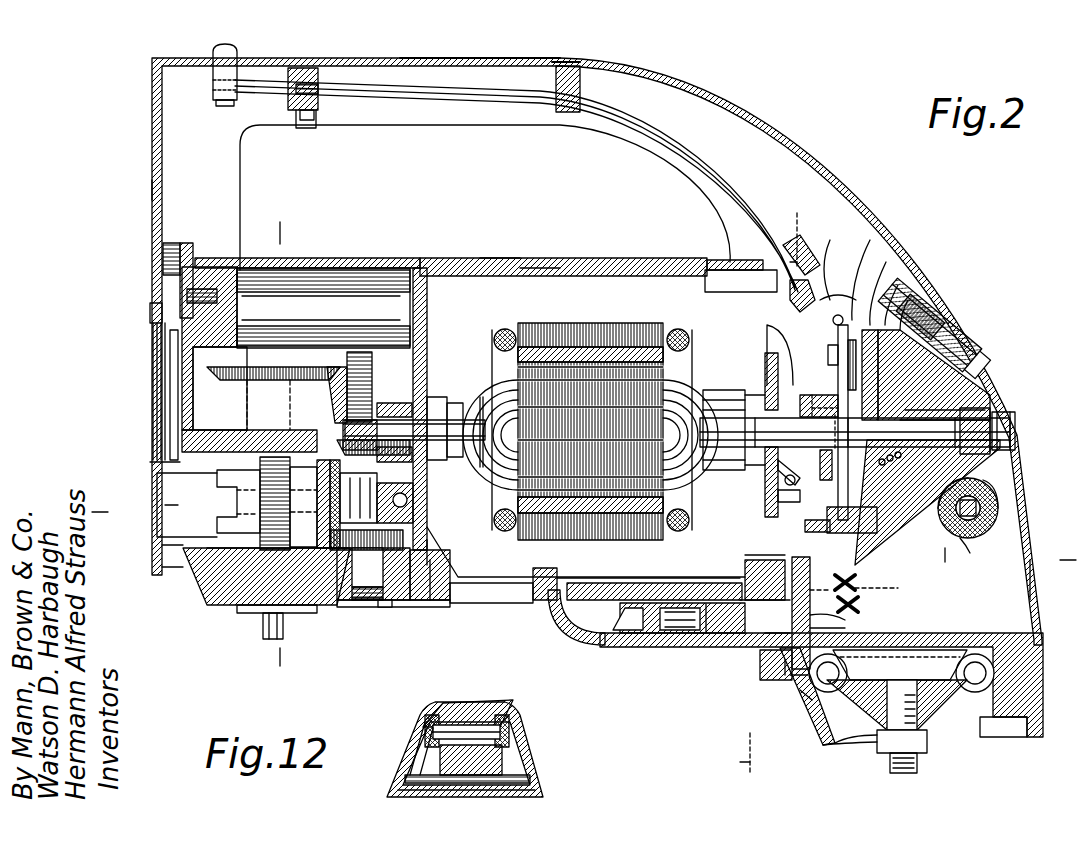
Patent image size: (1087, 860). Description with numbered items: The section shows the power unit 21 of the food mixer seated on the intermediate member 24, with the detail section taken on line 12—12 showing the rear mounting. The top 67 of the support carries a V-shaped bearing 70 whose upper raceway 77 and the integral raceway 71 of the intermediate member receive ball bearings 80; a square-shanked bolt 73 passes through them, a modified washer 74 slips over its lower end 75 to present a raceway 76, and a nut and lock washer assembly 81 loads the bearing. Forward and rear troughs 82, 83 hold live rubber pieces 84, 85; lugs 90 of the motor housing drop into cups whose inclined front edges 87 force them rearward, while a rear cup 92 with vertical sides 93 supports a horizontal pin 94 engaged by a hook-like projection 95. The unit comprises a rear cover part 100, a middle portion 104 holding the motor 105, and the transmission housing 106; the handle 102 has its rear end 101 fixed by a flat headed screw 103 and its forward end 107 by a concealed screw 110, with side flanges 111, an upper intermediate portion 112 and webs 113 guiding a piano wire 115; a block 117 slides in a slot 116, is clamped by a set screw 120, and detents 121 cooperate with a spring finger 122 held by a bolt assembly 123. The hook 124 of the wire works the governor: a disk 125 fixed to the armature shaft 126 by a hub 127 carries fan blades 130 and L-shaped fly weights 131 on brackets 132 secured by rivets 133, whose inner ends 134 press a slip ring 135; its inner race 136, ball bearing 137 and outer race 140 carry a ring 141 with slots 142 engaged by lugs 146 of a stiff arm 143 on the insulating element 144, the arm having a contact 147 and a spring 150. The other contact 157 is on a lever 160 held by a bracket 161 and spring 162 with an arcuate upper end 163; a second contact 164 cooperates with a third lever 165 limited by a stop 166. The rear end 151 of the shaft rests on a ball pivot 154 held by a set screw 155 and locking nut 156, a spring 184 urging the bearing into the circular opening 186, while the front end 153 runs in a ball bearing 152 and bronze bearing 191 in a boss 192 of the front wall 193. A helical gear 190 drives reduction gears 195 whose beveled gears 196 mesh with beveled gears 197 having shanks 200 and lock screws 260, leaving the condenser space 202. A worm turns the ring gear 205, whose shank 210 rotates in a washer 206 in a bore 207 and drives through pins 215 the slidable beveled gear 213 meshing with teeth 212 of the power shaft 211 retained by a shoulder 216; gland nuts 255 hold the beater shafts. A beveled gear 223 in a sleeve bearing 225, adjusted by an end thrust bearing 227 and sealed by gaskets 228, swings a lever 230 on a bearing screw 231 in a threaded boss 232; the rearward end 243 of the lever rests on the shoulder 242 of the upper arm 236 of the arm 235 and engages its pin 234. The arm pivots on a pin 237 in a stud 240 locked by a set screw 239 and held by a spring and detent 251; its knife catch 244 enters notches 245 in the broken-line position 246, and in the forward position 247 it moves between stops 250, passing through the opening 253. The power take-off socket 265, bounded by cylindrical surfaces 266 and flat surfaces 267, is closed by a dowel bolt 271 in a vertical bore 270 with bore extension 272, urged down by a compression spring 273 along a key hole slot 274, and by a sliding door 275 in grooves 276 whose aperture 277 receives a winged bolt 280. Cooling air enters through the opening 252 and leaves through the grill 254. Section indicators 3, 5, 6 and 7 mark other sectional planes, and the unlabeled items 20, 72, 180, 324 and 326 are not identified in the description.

In FIG. 2, the handle 102 is at (718, 100).
In FIG. 2, the forward end of the handle 107 is at (152, 190).
In FIG. 2, the upper raceway 77 is at (990, 655).
In FIG. 2, the recess 72 is at (1003, 727).
In FIG. 2, the inclined front edges 87 is at (560, 630).
In FIG. 2, the integral raceway 71 is at (962, 648).
In FIG. 2, the bearing 70 is at (988, 645).
In FIG. 2, the square headed and square shanked bolt 73 is at (897, 700).
In FIG. 2, the modified washer 74 is at (848, 745).
In FIG. 2, the lower end of the square shank 75 is at (915, 762).
In FIG. 2, the ball bearings 80 is at (810, 728).
In FIG. 2, the raceway 76 is at (820, 745).
In FIG. 2, the nut and lock washer assembly 81 is at (893, 758).
In FIG. 2, the section line 5 is at (795, 232).
In FIG. 2, the section line 6 is at (820, 262).
In FIG. 2, the section line 7 is at (1068, 548).
In FIG. 2, the section line 12 is at (935, 555).
In FIG. 2, the molded piece of live rubber 85 is at (937, 551).
In FIG. 12, the molded piece of live rubber 85 is at (520, 768).
In FIG. 2, the rear trough 83 is at (968, 530).
In FIG. 12, the rear trough 83 is at (515, 738).
In FIG. 2, the arcuately bottomed cup 92 is at (1000, 510).
In FIG. 12, the arcuately bottomed cup 92 is at (420, 738).
In FIG. 2, the horizontal pin 94 is at (995, 485).
In FIG. 12, the horizontal pin 94 is at (468, 708).
In FIG. 2, the hook-like projection 95 is at (1000, 495).
In FIG. 12, the hook-like projection 95 is at (408, 768).
In FIG. 2, the intermediate member 24 is at (1020, 555).
In FIG. 12, the intermediate member 24 is at (545, 790).
In FIG. 2, the stiff arm 143 is at (872, 484).
In FIG. 2, the stationary insulating element 144 is at (845, 484).
In FIG. 2, the spring 184 is at (915, 458).
In FIG. 2, the second ring 141 is at (800, 470).
In FIG. 2, the L-shaped members 131 is at (818, 485).
In FIG. 2, the grill 254 is at (494, 603).
In FIG. 2, the gaskets 228 is at (403, 607).
In FIG. 2, the beveled gear 223 is at (412, 604).
In FIG. 2, the sleeve bearing 225 is at (385, 607).
In FIG. 2, the end thrust ball bearing 227 is at (362, 620).
In FIG. 2, the bearing screw 231 is at (608, 578).
In FIG. 2, the threaded boss 232 is at (655, 580).
In FIG. 2, the molded piece of live rubber 84 is at (640, 645).
In FIG. 2, the forward trough 82 is at (615, 645).
In FIG. 2, the lugs 90 is at (670, 645).
In FIG. 2, the forward position 247 is at (708, 645).
In FIG. 2, the lever 230 is at (505, 558).
In FIG. 2, the opening 253 is at (750, 560).
In FIG. 2, the upwardly facing shoulder 242 is at (745, 565).
In FIG. 2, the rearward end 243 is at (768, 568).
In FIG. 2, the pin 234 is at (795, 565).
In FIG. 2, the upper arm portion 236 is at (850, 575).
In FIG. 2, the arm 235 is at (845, 590).
In FIG. 2, the broken-line position 246 is at (898, 592).
In FIG. 2, the knife catch 244 is at (855, 608).
In FIG. 2, the pin 237 is at (850, 622).
In FIG. 2, the spring and detent 251 is at (845, 633).
In FIG. 2, the stops 250 is at (765, 640).
In FIG. 2, the upper portion of the support 67 is at (778, 655).
In FIG. 2, the set screw 239 is at (785, 670).
In FIG. 2, the stud member 240 is at (790, 685).
In FIG. 2, the notches 245 is at (805, 705).
In FIG. 2, the side flanges 111 is at (515, 125).
In FIG. 2, the piano wire member 115 is at (475, 92).
In FIG. 2, the web portions 113 is at (370, 60).
In FIG. 2, the upper intermediate portion 112 is at (480, 58).
In FIG. 2, the slot 116 is at (290, 68).
In FIG. 2, the block 117 is at (232, 56).
In FIG. 2, the set screw 120 is at (225, 98).
In FIG. 2, the detents 121 is at (322, 95).
In FIG. 2, the spring finger 122 is at (315, 110).
In FIG. 2, the bolt assembly 123 is at (300, 118).
In FIG. 2, the section line 3 is at (258, 232).
In FIG. 2, the motor unit 20 is at (492, 250).
In FIG. 2, the power unit 21 is at (535, 262).
In FIG. 2, the middle portion 104 is at (588, 262).
In FIG. 2, the opening 252 is at (770, 285).
In FIG. 2, the front cover portion 106 is at (350, 262).
In FIG. 2, the condenser space 202 is at (318, 274).
In FIG. 2, the concealed screw 110 is at (240, 318).
In FIG. 2, the front wall 193 is at (425, 318).
In FIG. 2, the driving pins 215 is at (305, 455).
In FIG. 2, the shanks 200 is at (240, 375).
In FIG. 2, the beveled gears 197 is at (288, 372).
In FIG. 2, the beveled gears 196 is at (340, 380).
In FIG. 2, the lock screws 260 is at (260, 402).
In FIG. 2, the reduction gears 195 is at (372, 378).
In FIG. 2, the left hand helical gear 190 is at (368, 420).
In FIG. 2, the bronze bearing 191 is at (677, 432).
In FIG. 2, the boss 192 is at (420, 460).
In FIG. 2, the front end of the motor shaft 153 is at (455, 400).
In FIG. 2, the ball bearing 152 is at (437, 400).
In FIG. 2, the motor 105 is at (575, 325).
In FIG. 2, the rotor winding 180 is at (490, 488).
In FIG. 2, the insulating hub 127 is at (724, 430).
In FIG. 2, the armature shaft 126 is at (755, 390).
In FIG. 2, the outer race 140 is at (766, 362).
In FIG. 2, the fan blades 130 is at (768, 330).
In FIG. 2, the inner ends 134 is at (772, 432).
In FIG. 2, the radial slots 142 is at (816, 432).
In FIG. 2, the lugs 146 is at (863, 432).
In FIG. 2, the spring 150 is at (925, 432).
In FIG. 2, the contact 157 is at (830, 338).
In FIG. 2, the contact 147 is at (828, 352).
In FIG. 2, the slip ring 135 is at (832, 364).
In FIG. 2, the inner race 136 is at (832, 378).
In FIG. 2, the ball bearing 137 is at (832, 391).
In FIG. 2, the disk 125 is at (762, 472).
In FIG. 2, the rivets 133 is at (765, 492).
In FIG. 2, the brackets 132 is at (770, 506).
In FIG. 2, the hook 124 is at (790, 300).
In FIG. 2, the upper end 163 is at (800, 290).
In FIG. 2, the lever 160 is at (812, 270).
In FIG. 2, the bracket 161 is at (873, 240).
In FIG. 2, the spring 162 is at (890, 262).
In FIG. 2, the second contact 164 is at (900, 285).
In FIG. 2, the third lever 165 is at (910, 300).
In FIG. 2, the rear cover part 100 is at (930, 310).
In FIG. 2, the stop 166 is at (912, 325).
In FIG. 2, the flat headed screw 103 is at (960, 330).
In FIG. 2, the rear end of the handle 101 is at (958, 350).
In FIG. 2, the circular opening 186 is at (955, 375).
In FIG. 2, the rear end of the motor shaft 151 is at (965, 400).
In FIG. 2, the ball pivot 154 is at (980, 410).
In FIG. 2, the set screw 155 is at (993, 420).
In FIG. 2, the locking nut 156 is at (1015, 432).
In FIG. 2, the bore extension 272 is at (163, 252).
In FIG. 2, the compression spring 273 is at (163, 270).
In FIG. 2, the winged bolt 280 is at (188, 296).
In FIG. 2, the aperture 277 is at (150, 320).
In FIG. 2, the key hole slot 274 is at (160, 348).
In FIG. 2, the dowel bolt 271 is at (172, 380).
In FIG. 2, the sliding door 275 is at (160, 395).
In FIG. 2, the vertical bore 270 is at (165, 418).
In FIG. 2, the cylindrical surfaces 266 is at (165, 455).
In FIG. 2, the parallel flat surfaces 267 is at (170, 478).
In FIG. 2, the vertical parallel grooves 276 is at (165, 510).
In FIG. 2, the power take-off socket 265 is at (160, 553).
In FIG. 2, the ring gear 205 is at (258, 472).
In FIG. 2, the shoulder 216 is at (230, 498).
In FIG. 2, the power shaft 211 is at (228, 519).
In FIG. 2, the shank 210 is at (308, 548).
In FIG. 2, the washer 206 is at (266, 576).
In FIG. 2, the longitudinal bore 207 is at (280, 552).
In FIG. 2, the bolt 324 is at (348, 605).
In FIG. 2, the nut 326 is at (360, 608).
In FIG. 2, the gland nuts 255 is at (240, 613).
In FIG. 2, the teeth 212 is at (352, 485).
In FIG. 2, the beveled gear 213 is at (395, 485).
In FIG. 12, the vertical sides 93 is at (425, 718).